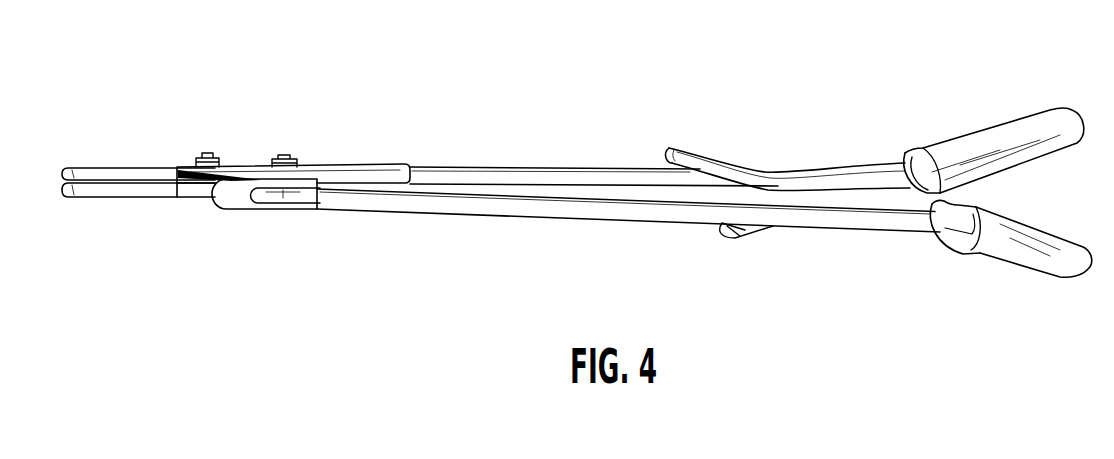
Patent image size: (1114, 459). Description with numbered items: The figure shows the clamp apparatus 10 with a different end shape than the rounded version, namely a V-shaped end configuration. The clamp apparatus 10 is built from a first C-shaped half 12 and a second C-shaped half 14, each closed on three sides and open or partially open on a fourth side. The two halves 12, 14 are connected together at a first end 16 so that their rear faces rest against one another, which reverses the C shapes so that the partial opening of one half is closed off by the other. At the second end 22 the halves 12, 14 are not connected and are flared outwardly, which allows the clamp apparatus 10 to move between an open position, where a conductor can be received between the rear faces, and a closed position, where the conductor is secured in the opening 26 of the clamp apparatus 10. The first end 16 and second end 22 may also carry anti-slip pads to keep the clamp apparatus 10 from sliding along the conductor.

The clamp apparatus 10 is at (848, 57).
The first C-shaped half 12 is at (531, 172).
The second C-shaped half 14 is at (562, 211).
The first end 16 is at (196, 189).
The second end 22 is at (1061, 122).
The opening 26 is at (599, 178).